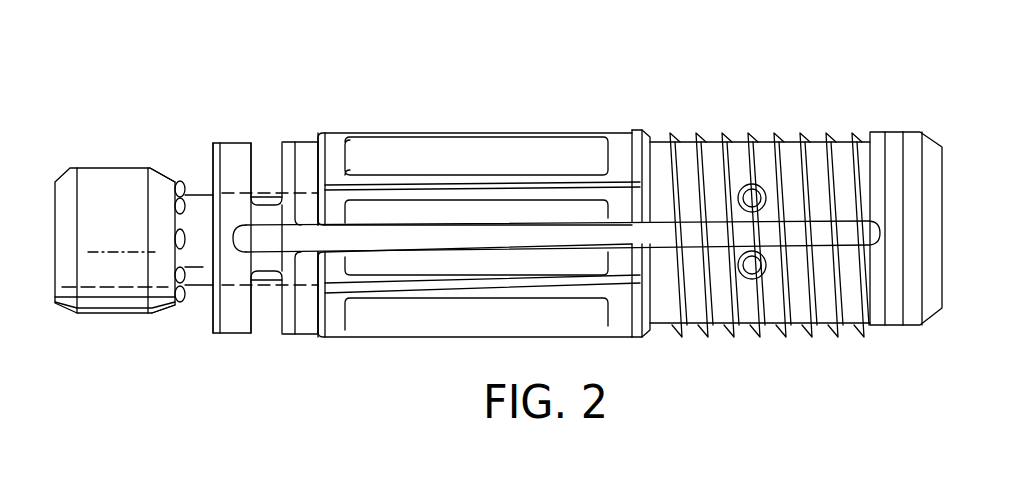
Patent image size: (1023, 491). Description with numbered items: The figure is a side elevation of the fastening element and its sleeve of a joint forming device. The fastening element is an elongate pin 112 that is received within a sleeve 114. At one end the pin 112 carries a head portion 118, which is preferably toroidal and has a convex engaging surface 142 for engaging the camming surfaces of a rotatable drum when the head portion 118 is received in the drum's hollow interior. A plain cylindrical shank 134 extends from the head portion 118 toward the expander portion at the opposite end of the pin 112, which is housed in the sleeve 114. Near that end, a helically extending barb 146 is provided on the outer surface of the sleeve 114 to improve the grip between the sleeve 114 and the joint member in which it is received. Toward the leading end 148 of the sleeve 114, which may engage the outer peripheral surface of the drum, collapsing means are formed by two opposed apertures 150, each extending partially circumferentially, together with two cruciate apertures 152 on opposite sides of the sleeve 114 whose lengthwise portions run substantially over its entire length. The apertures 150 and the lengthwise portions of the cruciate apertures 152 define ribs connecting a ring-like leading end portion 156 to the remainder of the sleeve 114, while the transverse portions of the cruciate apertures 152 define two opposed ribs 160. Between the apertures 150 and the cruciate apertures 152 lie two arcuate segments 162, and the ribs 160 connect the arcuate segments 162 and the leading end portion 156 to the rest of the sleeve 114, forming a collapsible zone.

The pin 112 is at (923, 178).
The sleeve 114 is at (460, 128).
The head portion 118 is at (97, 183).
The shank 134 is at (203, 278).
The convex engaging surface 142 is at (165, 168).
The helically extending barb 146 is at (775, 137).
The leading end 148 is at (211, 322).
The opposed apertures 150 is at (266, 173).
The cruciate apertures 152 is at (333, 240).
The ring-like leading end portion 156 is at (233, 334).
The ribs 160 is at (307, 153).
The arcuate segments 162 is at (287, 336).